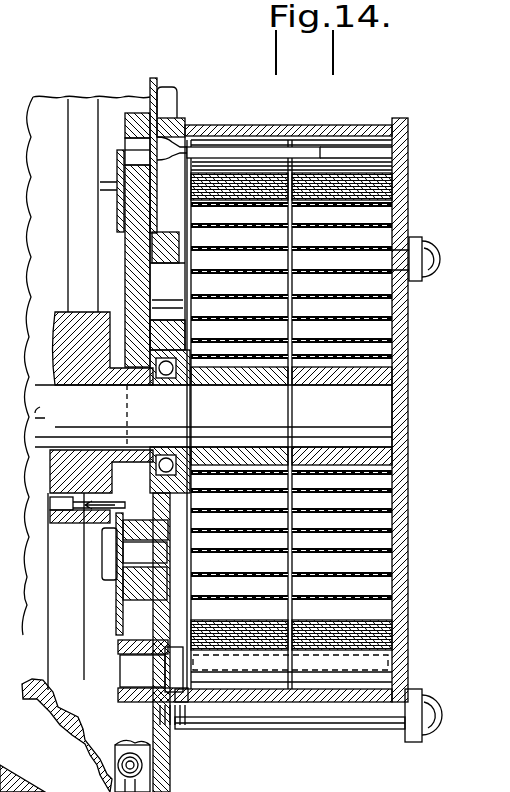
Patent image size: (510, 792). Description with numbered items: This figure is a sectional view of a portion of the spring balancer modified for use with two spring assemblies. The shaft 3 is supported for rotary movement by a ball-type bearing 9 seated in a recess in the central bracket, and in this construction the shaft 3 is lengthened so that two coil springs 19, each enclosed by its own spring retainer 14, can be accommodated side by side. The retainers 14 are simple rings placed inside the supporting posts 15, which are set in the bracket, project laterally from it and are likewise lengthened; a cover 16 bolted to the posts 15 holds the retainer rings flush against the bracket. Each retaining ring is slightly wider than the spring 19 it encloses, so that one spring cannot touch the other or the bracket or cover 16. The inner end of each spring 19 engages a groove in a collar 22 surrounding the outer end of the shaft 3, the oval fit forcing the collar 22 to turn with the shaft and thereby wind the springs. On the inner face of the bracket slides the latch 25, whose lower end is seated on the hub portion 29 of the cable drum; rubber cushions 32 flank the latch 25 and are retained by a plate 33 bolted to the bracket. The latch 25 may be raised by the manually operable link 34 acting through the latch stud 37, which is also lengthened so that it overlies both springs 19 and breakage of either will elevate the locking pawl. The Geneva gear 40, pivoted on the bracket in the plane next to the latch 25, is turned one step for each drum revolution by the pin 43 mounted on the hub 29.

The shaft 3 is at (376, 420).
The bearing 9 is at (154, 386).
The spring retainer 14 is at (283, 126).
The posts 15 is at (412, 247).
The cover 16 is at (408, 536).
The coil spring 19 is at (382, 314).
The collar 22 is at (378, 380).
The latch 25 is at (128, 294).
The hub portion 29 is at (64, 312).
The cushions 32 is at (152, 250).
The plate 33 is at (117, 160).
The manually operable link 34 is at (157, 80).
The stud 37 is at (242, 148).
The Geneva gear 40 is at (140, 610).
The pin 43 is at (72, 523).